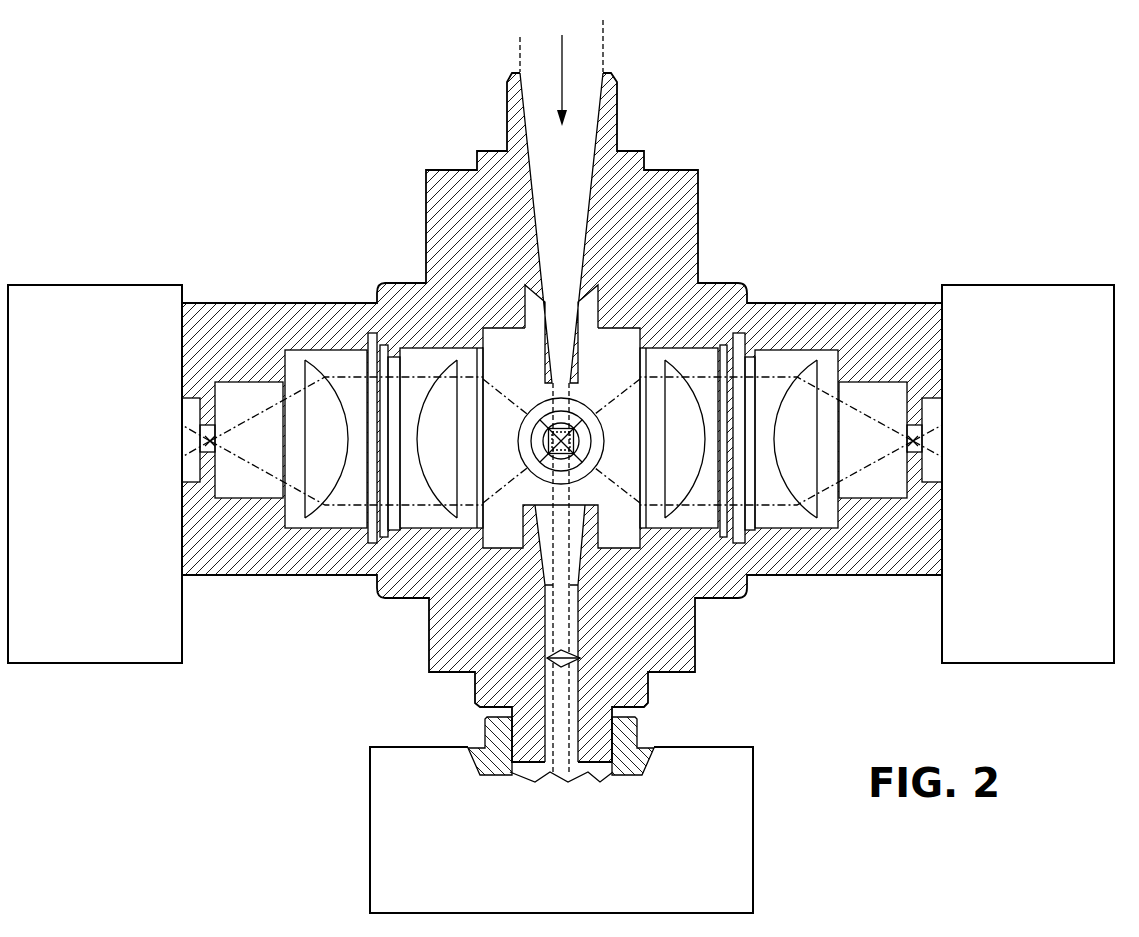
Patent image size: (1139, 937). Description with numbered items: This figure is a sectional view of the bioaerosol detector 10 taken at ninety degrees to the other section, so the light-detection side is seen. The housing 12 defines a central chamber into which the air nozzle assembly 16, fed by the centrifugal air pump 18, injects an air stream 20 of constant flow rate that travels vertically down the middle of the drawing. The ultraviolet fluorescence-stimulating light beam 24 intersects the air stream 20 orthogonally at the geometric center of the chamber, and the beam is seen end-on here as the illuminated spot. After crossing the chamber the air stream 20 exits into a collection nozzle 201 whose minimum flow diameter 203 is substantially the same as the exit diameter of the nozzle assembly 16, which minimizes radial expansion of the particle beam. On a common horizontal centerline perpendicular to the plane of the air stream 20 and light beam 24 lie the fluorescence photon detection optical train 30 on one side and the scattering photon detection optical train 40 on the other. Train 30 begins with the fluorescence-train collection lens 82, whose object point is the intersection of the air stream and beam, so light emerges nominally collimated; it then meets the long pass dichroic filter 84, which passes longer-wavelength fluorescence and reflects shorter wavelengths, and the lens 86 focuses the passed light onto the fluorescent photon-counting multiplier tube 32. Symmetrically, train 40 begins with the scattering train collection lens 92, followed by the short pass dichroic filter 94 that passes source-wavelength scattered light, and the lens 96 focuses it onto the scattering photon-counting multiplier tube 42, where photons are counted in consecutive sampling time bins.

The bioaerosol detector 10 is at (561, 466).
The housing 12 is at (698, 215).
The air nozzle assembly 16 is at (537, 221).
The centrifugal air pump 18 is at (549, 851).
The air stream 20 is at (553, 392).
The fluorescence-stimulating light beam 24 is at (573, 440).
The fluorescence photon detection optical train 30 is at (834, 337).
The fluorescent photon-counting multiplier tube 32 is at (1009, 478).
The scattering photon detection optical train 40 is at (289, 337).
The scattering photon-counting multiplier tube 42 is at (77, 478).
The fluorescence-train collection lens 82 is at (654, 457).
The long pass dichroic filter 84 is at (742, 545).
The focusing lens 86 is at (799, 457).
The scattering train collection lens 92 is at (434, 457).
The short pass dichroic filter 94 is at (377, 545).
The focusing lens 96 is at (297, 457).
The collection nozzle 201 is at (577, 527).
The minimum flow diameter 203 is at (580, 658).